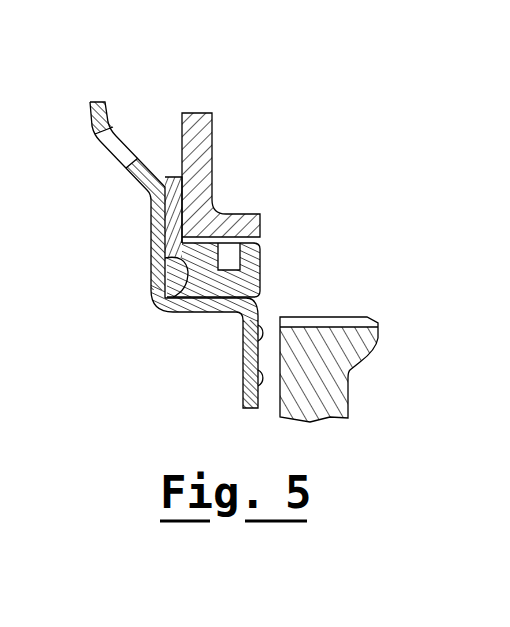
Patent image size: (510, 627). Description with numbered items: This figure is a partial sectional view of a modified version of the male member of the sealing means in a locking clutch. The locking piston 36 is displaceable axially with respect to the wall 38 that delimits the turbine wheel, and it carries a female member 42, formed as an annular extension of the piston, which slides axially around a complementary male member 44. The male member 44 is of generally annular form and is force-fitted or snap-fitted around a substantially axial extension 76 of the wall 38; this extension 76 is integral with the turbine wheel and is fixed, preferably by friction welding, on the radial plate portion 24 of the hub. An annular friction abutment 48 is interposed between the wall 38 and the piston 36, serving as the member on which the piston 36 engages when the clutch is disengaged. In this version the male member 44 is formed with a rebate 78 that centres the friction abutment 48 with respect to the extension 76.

The radial plate portion 24 is at (328, 387).
The locking piston 36 is at (205, 132).
The wall 38 is at (152, 197).
The female member 42 is at (232, 213).
The male member 44 is at (250, 257).
The annular friction abutment 48 is at (173, 222).
The axial extension 76 is at (210, 305).
The rebate 78 is at (186, 262).